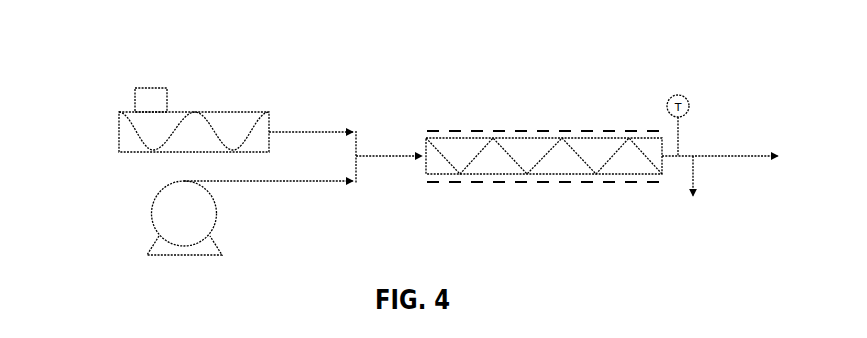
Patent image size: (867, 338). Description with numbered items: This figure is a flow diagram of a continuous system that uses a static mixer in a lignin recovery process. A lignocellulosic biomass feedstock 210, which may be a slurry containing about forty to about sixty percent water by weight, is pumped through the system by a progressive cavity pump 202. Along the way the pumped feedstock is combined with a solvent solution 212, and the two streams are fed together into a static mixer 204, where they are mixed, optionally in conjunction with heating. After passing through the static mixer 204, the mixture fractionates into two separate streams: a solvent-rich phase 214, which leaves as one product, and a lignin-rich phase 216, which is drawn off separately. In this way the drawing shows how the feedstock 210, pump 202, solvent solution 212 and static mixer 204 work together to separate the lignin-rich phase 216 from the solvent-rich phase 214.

The lignocellulosic biomass feedstock 210 is at (150, 86).
The progressive cavity pump 202 is at (208, 110).
The solvent solution 212 is at (181, 213).
The static mixer 204 is at (513, 147).
The solvent-rich phase 214 is at (738, 156).
The lignin-rich phase 216 is at (692, 188).